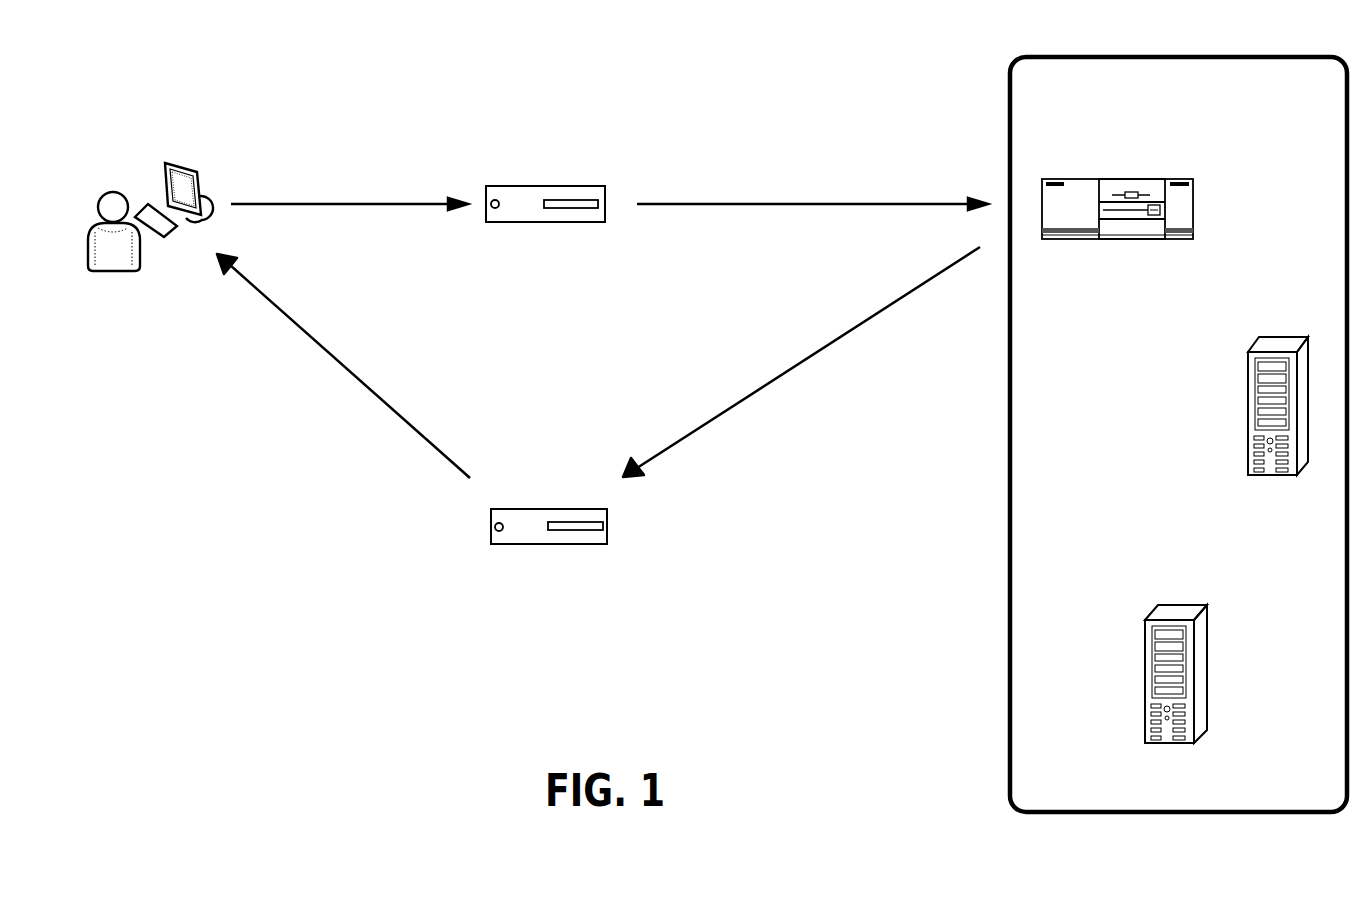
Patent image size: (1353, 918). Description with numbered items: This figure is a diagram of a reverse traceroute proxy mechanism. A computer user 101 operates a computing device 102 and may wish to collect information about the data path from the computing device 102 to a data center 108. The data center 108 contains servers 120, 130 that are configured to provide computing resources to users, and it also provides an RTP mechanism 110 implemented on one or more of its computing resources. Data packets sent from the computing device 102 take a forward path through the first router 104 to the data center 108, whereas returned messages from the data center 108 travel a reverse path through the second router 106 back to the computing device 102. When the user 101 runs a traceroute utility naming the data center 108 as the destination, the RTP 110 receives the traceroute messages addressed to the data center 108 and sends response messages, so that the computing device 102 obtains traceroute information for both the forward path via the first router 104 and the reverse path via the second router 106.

The computer user 101 is at (96, 222).
The computing device 102 is at (165, 176).
The router 1 104 is at (548, 186).
The router 2 106 is at (560, 509).
The data center 108 is at (1237, 57).
The RTP mechanism 110 is at (1150, 179).
The server 120 is at (1283, 337).
The server 130 is at (1181, 605).